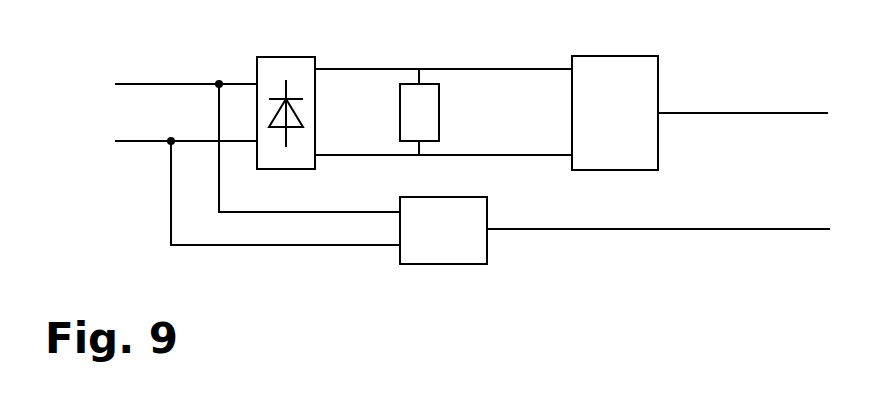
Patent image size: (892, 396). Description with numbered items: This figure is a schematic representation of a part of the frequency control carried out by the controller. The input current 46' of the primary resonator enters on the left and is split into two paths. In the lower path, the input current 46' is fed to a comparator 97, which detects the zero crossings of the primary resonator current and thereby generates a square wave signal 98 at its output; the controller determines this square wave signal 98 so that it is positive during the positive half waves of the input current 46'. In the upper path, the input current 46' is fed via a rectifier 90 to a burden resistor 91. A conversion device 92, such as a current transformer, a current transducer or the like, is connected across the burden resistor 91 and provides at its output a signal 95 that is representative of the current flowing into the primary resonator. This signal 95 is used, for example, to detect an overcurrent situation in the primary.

The input current of the primary resonator 46' is at (244, 162).
The rectifier 90 is at (265, 53).
The burden resistor 91 is at (407, 83).
The conversion device 92 is at (585, 53).
The signal representative of the current flowing into the primary resonator 95 is at (797, 112).
The comparator 97 is at (423, 266).
The square wave signal 98 is at (800, 229).